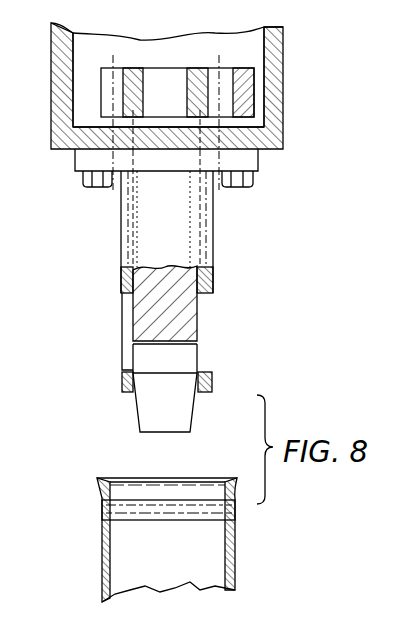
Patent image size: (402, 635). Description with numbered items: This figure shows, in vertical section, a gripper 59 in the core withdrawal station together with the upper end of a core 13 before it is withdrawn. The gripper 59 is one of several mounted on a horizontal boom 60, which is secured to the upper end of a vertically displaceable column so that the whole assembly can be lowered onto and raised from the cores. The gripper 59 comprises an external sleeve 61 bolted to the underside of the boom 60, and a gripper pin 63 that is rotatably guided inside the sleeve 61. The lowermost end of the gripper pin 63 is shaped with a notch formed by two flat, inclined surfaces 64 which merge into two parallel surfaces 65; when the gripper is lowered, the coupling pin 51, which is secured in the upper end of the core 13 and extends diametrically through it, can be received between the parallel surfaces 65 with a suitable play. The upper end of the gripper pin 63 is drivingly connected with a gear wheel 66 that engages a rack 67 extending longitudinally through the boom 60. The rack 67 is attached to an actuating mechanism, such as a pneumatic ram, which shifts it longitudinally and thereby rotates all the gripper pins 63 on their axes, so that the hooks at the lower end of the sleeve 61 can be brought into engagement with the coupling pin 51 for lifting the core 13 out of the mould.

The core 13 is at (235, 570).
The coupling pin 51 is at (208, 507).
The gripper 59 is at (213, 240).
The horizontal boom 60 is at (273, 137).
The external sleeve 61 is at (122, 277).
The gripper pin 63 is at (187, 313).
The flat inclined surfaces 64 is at (183, 412).
The parallel surfaces 65 is at (185, 360).
The gear wheel 66 is at (133, 76).
The rack 67 is at (243, 88).